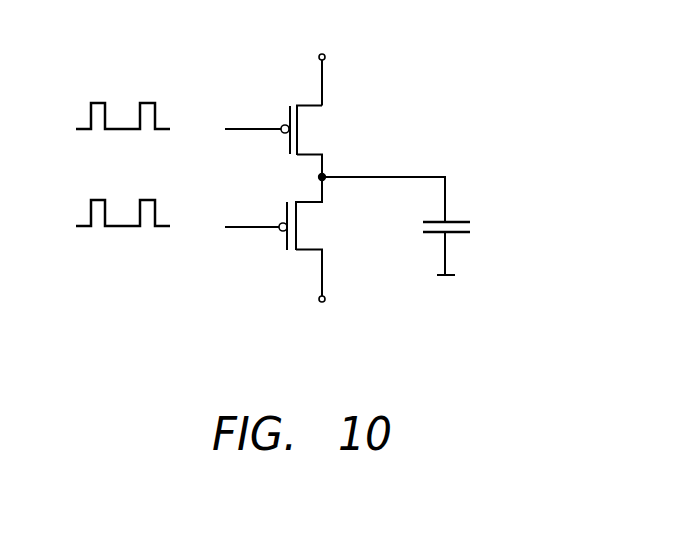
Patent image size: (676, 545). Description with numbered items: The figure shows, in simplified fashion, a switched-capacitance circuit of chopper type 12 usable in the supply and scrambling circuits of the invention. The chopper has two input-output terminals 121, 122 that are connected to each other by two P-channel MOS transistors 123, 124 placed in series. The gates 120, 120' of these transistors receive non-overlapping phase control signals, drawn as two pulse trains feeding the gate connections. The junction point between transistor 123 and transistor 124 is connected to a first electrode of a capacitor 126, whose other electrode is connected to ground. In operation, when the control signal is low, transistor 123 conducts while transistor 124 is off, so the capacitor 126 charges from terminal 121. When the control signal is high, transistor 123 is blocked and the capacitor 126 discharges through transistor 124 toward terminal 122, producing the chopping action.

The switched-capacitance circuit of chopper type 12 is at (364, 122).
The input-output terminal 121 is at (326, 54).
The input-output terminal 122 is at (318, 303).
The P-channel MOS transistor 123 is at (303, 102).
The P-channel MOS transistor 124 is at (305, 252).
The gate 120 is at (178, 142).
The gate 120' is at (177, 235).
The capacitor 126 is at (453, 221).